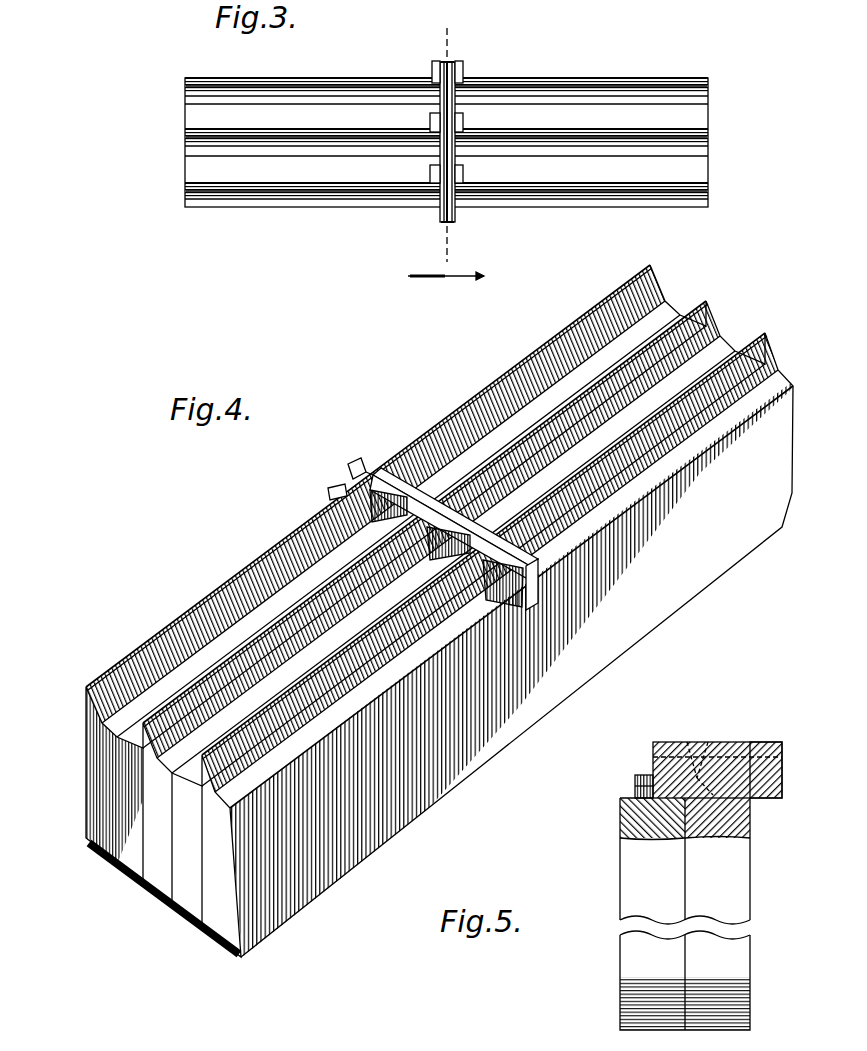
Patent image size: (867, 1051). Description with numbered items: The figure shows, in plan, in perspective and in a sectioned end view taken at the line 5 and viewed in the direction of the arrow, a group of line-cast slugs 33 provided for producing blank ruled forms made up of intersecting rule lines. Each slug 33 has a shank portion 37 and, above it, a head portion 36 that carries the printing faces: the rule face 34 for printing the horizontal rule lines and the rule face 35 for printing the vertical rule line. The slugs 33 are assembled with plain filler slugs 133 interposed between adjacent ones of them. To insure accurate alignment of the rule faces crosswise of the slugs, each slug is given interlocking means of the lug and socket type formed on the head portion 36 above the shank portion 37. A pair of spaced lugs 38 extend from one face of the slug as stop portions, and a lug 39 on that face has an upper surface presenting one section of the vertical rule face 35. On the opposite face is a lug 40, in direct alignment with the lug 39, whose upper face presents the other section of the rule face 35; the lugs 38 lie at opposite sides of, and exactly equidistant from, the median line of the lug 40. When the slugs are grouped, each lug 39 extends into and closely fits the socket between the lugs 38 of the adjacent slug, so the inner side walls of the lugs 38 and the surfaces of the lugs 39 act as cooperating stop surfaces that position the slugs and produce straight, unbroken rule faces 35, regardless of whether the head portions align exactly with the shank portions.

In FIG. 3, the section line 5 is at (446, 170).
In FIG. 4, the slug 33 is at (150, 792).
In FIG. 5, the slug 33 is at (745, 863).
In FIG. 3, the horizontal rule face 34 is at (613, 77).
In FIG. 4, the horizontal rule face 34 is at (543, 413).
In FIG. 5, the horizontal rule face 34 is at (687, 742).
In FIG. 3, the vertical rule face 35 is at (443, 64).
In FIG. 4, the vertical rule face 35 is at (390, 470).
In FIG. 5, the vertical rule face 35 is at (770, 742).
In FIG. 3, the head portion 36 is at (708, 89).
In FIG. 4, the head portion 36 is at (85, 698).
In FIG. 5, the head portion 36 is at (708, 742).
In FIG. 3, the shank portion 37 is at (702, 102).
In FIG. 4, the shank portion 37 is at (92, 810).
In FIG. 5, the shank portion 37 is at (733, 903).
In FIG. 3, the lugs 38 is at (452, 66).
In FIG. 4, the lugs 38 is at (393, 533).
In FIG. 5, the lugs 38 is at (643, 774).
In FIG. 3, the lug 39 is at (452, 222).
In FIG. 4, the lug 39 is at (530, 590).
In FIG. 5, the lug 39 is at (785, 763).
In FIG. 3, the lug 40 is at (447, 60).
In FIG. 4, the lug 40 is at (352, 477).
In FIG. 5, the lug 40 is at (635, 787).
In FIG. 3, the filler slug 133 is at (193, 115).
In FIG. 4, the filler slug 133 is at (183, 858).
In FIG. 5, the filler slug 133 is at (622, 867).